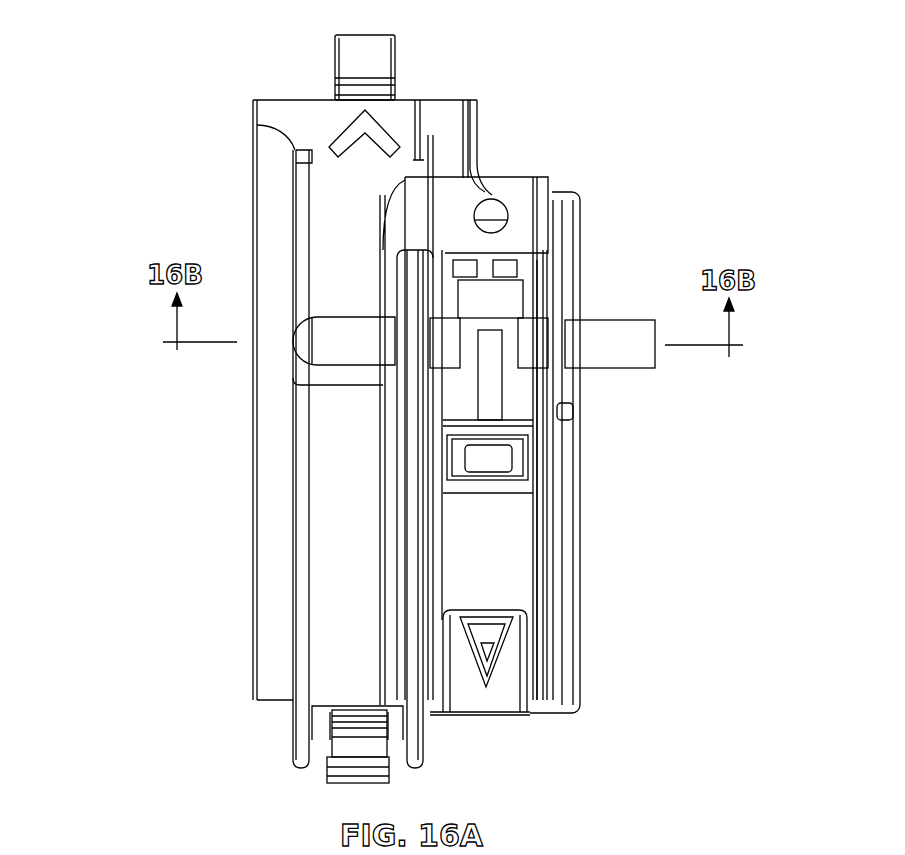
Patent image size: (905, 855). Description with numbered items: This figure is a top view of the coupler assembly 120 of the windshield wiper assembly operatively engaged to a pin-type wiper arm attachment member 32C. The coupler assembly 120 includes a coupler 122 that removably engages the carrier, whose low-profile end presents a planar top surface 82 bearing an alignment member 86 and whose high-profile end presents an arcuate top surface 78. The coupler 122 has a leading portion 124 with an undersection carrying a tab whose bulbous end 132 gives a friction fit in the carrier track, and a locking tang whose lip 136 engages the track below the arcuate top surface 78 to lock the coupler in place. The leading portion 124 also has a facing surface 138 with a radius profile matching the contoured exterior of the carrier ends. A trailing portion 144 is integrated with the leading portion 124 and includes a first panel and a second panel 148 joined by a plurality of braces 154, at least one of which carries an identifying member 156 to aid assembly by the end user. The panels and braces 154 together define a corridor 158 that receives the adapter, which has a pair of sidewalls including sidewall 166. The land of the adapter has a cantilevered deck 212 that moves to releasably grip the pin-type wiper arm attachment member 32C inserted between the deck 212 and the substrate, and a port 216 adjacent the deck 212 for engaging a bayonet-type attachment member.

The bulbous end 132 is at (335, 45).
The alignment member 86 is at (342, 130).
The planar top surface 82 is at (322, 185).
The braces 154 is at (478, 187).
The port 216 is at (503, 200).
The deck 212 is at (510, 343).
The pin-type wiper arm attachment member 32C is at (635, 368).
The sidewall 166 is at (547, 457).
The coupler assembly 120 is at (152, 410).
The coupler 122 is at (192, 470).
The facing surface 138 is at (265, 570).
The leading portion 124 is at (240, 605).
The second panel 148 is at (577, 612).
The trailing portion 144 is at (598, 660).
The arcuate top surface 78 is at (320, 663).
The lip 136 is at (336, 783).
The identifying member 156 is at (497, 663).
The corridor 158 is at (487, 698).